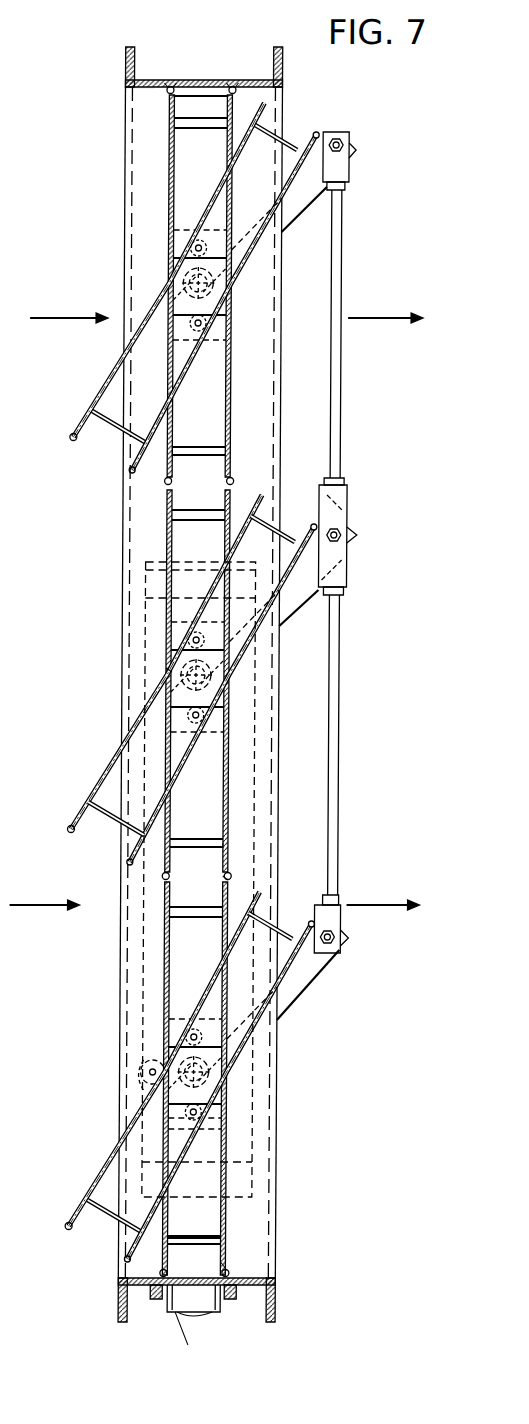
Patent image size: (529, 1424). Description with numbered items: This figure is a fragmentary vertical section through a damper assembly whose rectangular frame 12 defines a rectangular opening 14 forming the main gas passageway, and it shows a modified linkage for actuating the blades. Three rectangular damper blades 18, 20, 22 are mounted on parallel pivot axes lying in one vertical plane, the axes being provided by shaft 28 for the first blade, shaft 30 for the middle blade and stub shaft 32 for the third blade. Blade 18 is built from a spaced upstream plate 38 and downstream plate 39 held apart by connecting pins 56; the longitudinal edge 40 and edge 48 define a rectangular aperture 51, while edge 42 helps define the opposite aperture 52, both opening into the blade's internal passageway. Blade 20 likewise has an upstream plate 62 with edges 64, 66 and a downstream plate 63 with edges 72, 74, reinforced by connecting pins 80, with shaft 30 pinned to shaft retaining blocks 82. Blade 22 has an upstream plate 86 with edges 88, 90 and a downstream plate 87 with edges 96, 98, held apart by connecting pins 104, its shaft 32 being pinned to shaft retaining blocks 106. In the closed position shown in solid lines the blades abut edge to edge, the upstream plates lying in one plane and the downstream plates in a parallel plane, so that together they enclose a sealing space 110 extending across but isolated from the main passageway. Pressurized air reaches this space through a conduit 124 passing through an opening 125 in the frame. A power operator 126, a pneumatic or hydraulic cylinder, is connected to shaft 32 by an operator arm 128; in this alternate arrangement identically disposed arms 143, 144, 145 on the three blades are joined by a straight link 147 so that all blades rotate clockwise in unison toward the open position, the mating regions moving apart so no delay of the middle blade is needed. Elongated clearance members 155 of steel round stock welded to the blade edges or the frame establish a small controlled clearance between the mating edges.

The rectangular frame 12 is at (218, 78).
The rectangular opening 14 is at (135, 90).
The damper blade 18 is at (170, 192).
The damper blade 20 is at (168, 638).
The damper blade 22 is at (168, 972).
The shaft 28 is at (215, 284).
The shaft 30 is at (215, 695).
The stub shaft 32 is at (200, 1112).
The upstream plate 38 is at (170, 232).
The downstream plate 39 is at (296, 190).
The longitudinal edge 40 is at (172, 100).
The longitudinal edge 42 is at (136, 468).
The longitudinal edge 48 is at (232, 95).
The rectangular aperture 51 is at (186, 92).
The rectangular aperture 52 is at (212, 452).
The connecting pins 56 is at (200, 128).
The upstream plate 62 is at (108, 760).
The downstream plate 63 is at (294, 598).
The longitudinal edge 64 is at (172, 498).
The longitudinal edge 66 is at (122, 826).
The longitudinal edge 72 is at (200, 514).
The longitudinal edge 74 is at (231, 868).
The connecting pins 80 is at (195, 522).
The shaft retaining blocks 82 is at (176, 670).
The upstream plate 86 is at (170, 1012).
The downstream plate 87 is at (228, 990).
The longitudinal edge 88 is at (170, 893).
The longitudinal edge 90 is at (178, 1270).
The longitudinal edge 96 is at (230, 876).
The longitudinal edge 98 is at (232, 1264).
The connecting pins 104 is at (188, 916).
The shaft retaining blocks 106 is at (215, 1062).
The enclosed sealing space 110 is at (175, 520).
The conduit 124 is at (222, 1310).
The opening 125 is at (185, 1318).
The power operator 126 is at (205, 1320).
The operator arm 128 is at (150, 1062).
The arm 143 is at (357, 150).
The arm 144 is at (360, 538).
The arm 145 is at (354, 955).
The straight link 147 is at (343, 422).
The elongated clearance establishing members 155 is at (165, 86).